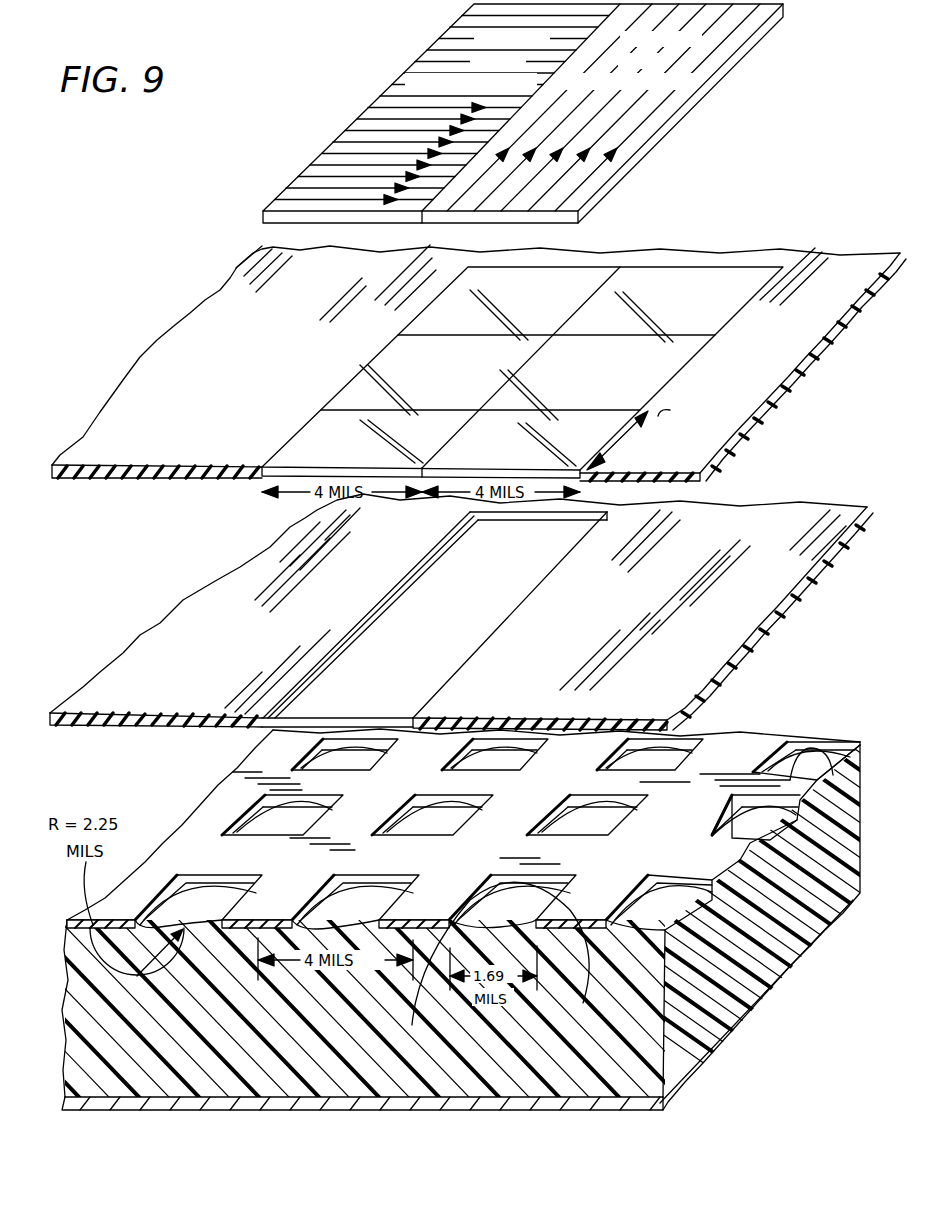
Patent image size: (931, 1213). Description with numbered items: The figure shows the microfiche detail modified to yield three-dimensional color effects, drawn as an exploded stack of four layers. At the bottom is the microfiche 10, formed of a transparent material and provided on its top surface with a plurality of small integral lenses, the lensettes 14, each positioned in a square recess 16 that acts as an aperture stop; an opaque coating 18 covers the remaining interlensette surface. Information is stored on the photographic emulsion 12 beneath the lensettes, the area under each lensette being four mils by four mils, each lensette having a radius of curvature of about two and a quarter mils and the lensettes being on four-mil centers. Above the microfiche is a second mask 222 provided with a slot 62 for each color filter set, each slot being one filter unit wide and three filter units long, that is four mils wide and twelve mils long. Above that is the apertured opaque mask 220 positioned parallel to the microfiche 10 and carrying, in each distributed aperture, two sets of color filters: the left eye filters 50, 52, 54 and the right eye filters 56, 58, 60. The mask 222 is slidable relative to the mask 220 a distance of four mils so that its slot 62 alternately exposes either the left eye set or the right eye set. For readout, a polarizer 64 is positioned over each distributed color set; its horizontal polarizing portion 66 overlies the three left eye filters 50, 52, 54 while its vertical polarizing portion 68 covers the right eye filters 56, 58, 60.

The microfiche 10 is at (797, 920).
The photographic emulsion 12 is at (747, 1022).
The lensette 14 is at (500, 953).
The recess 16 is at (417, 1027).
The opaque coating 18 is at (827, 763).
The left eye filter 50 is at (330, 418).
The left eye filter 52 is at (378, 362).
The left eye filter 54 is at (453, 287).
The right eye filter 56 is at (630, 425).
The right eye filter 58 is at (700, 357).
The right eye filter 60 is at (760, 285).
The slot 62 is at (333, 727).
The polarizer 64 is at (448, 50).
The horizontal polarizing portion 66 is at (338, 154).
The vertical polarizing portion 68 is at (657, 125).
The apertured opaque mask 220 is at (212, 416).
The second mask 222 is at (187, 666).